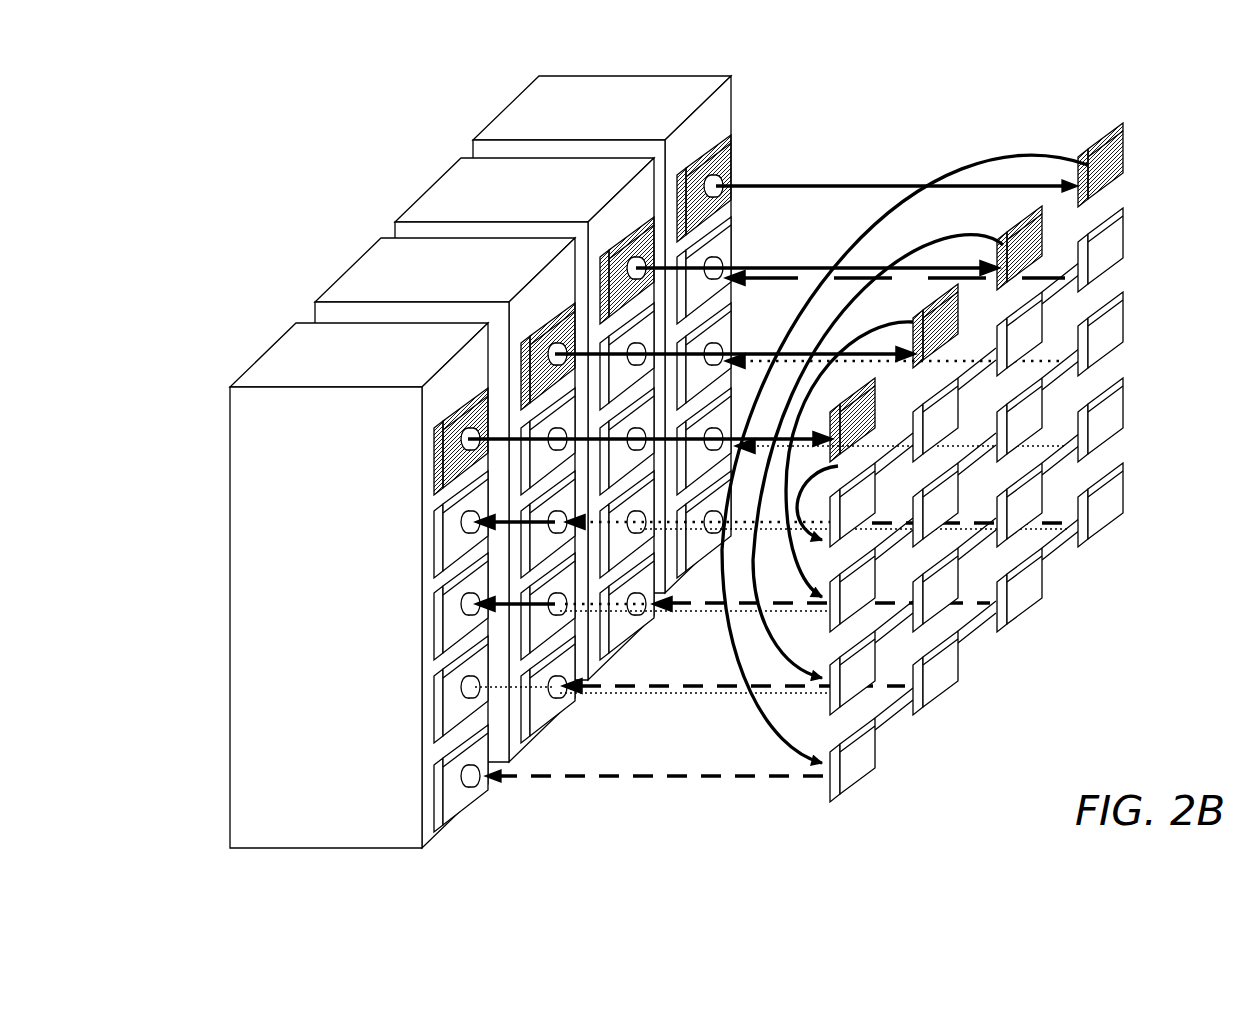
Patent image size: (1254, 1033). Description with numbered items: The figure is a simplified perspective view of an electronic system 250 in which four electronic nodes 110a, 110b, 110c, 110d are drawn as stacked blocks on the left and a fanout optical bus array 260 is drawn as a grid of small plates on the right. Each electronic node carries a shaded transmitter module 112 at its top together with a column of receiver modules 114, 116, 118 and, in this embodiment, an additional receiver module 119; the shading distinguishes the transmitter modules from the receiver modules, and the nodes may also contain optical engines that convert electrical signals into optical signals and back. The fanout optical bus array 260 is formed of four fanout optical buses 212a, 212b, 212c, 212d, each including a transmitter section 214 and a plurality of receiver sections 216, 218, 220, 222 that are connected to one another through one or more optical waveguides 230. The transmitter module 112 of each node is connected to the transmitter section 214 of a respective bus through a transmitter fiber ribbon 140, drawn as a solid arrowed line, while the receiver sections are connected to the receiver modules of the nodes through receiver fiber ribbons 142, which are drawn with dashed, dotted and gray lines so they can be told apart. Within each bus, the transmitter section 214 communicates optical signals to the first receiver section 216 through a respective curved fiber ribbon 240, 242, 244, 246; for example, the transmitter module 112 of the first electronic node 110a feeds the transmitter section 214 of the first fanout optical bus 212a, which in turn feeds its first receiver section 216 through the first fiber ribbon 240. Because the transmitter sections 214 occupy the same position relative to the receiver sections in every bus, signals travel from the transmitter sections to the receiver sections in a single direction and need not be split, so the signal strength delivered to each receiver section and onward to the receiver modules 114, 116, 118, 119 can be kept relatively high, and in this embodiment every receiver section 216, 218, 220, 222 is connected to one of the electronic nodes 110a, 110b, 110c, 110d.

The electronic node 110a is at (252, 368).
The electronic node 110b is at (350, 271).
The electronic node 110c is at (430, 188).
The electronic node 110d is at (507, 108).
The transmitter module 112 is at (433, 462).
The receiver module 114 is at (433, 548).
The receiver module 116 is at (433, 634).
The receiver module 118 is at (433, 718).
The receiver module 119 is at (433, 800).
The transmitter fiber ribbon 140 is at (795, 184).
The receiver fiber ribbon 142 is at (622, 782).
The fanout optical bus 212a is at (1141, 216).
The fanout optical bus 212b is at (1141, 301).
The fanout optical bus 212c is at (1141, 388).
The fanout optical bus 212d is at (1141, 473).
The transmitter section 214 is at (1095, 150).
The receiver section 216 is at (852, 514).
The receiver section 218 is at (935, 415).
The receiver section 220 is at (1017, 330).
The receiver section 222 is at (1124, 251).
The optical waveguide 230 is at (920, 722).
The fiber ribbon 240 is at (795, 492).
The fiber ribbon 242 is at (853, 330).
The fiber ribbon 244 is at (930, 235).
The fiber ribbon 246 is at (1020, 150).
The electronic system 250 is at (350, 122).
The fanout optical bus array 260 is at (1137, 597).